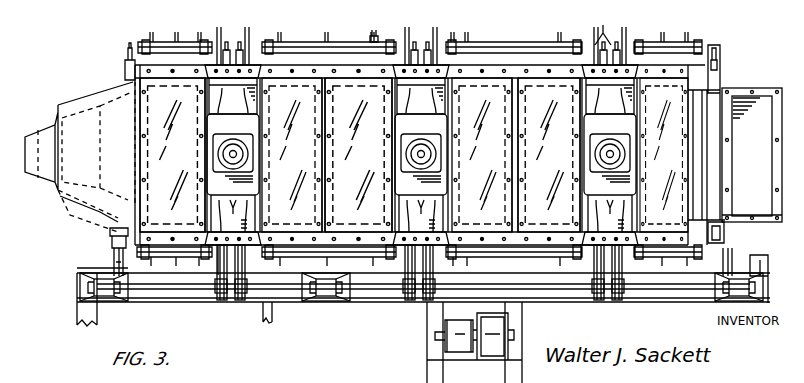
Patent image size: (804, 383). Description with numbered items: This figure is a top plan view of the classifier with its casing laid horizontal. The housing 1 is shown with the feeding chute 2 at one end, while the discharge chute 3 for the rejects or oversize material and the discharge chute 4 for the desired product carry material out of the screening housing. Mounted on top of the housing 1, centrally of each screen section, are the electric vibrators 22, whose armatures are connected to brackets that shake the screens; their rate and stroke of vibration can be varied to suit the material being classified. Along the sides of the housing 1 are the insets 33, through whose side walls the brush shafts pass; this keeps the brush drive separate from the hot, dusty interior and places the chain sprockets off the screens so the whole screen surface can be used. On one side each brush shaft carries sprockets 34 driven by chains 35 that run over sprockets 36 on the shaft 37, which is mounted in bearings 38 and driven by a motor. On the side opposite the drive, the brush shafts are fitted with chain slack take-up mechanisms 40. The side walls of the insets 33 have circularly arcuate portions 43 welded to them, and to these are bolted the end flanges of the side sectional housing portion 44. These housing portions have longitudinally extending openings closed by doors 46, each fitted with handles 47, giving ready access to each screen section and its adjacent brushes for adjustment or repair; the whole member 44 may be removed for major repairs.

The housing 1 is at (693, 78).
The feeding chute 2 is at (744, 90).
The discharge chute 3 is at (78, 104).
The discharge chute 4 is at (70, 218).
The electric vibrators 22 is at (216, 147).
The insets 33 is at (603, 30).
The sprockets 34 is at (112, 240).
The chains 35 is at (114, 254).
The sprockets 36 is at (238, 296).
The shaft 37 is at (186, 292).
The bearings 38 is at (101, 293).
The chain slack take-up mechanisms 40 is at (417, 58).
The circularly arcuate portions 43 is at (219, 40).
The side sectional housing portion 44 is at (284, 64).
The doors 46 is at (328, 42).
The handles 47 is at (375, 35).